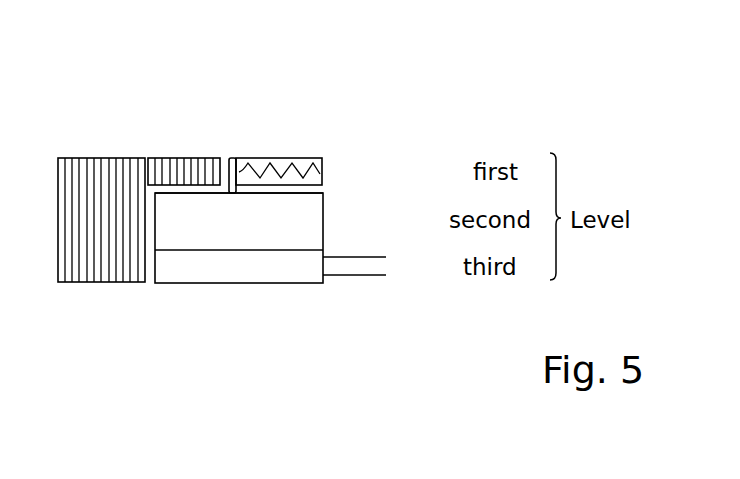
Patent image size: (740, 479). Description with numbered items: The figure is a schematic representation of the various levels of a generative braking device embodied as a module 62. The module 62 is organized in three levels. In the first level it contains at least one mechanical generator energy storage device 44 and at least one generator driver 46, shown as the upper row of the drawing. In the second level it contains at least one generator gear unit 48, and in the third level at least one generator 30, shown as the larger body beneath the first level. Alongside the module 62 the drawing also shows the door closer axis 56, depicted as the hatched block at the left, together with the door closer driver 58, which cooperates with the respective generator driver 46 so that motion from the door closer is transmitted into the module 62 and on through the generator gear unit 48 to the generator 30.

The generator 30 is at (239, 263).
The mechanical generator energy storage device 44 is at (298, 158).
The generator driver 46 is at (232, 158).
The generator gear unit 48 is at (308, 221).
The door closer axis 56 is at (113, 268).
The door closer driver 58 is at (222, 158).
The module 62 is at (338, 82).